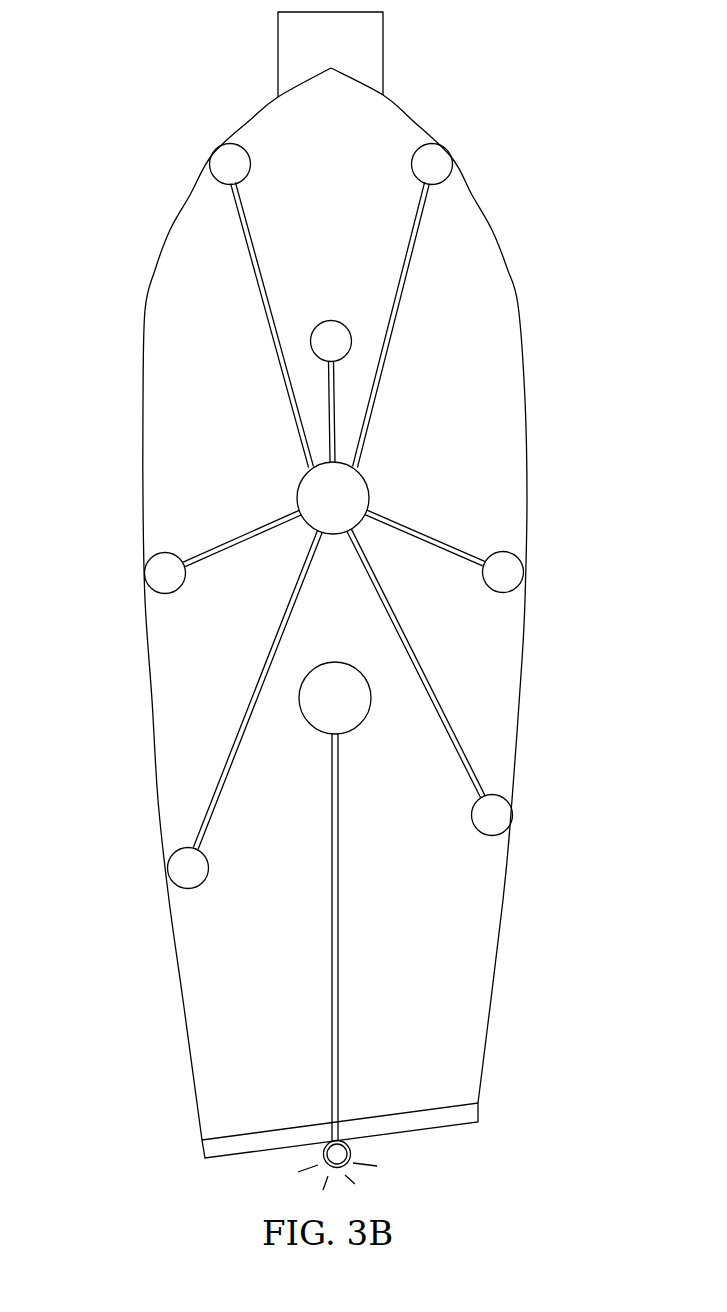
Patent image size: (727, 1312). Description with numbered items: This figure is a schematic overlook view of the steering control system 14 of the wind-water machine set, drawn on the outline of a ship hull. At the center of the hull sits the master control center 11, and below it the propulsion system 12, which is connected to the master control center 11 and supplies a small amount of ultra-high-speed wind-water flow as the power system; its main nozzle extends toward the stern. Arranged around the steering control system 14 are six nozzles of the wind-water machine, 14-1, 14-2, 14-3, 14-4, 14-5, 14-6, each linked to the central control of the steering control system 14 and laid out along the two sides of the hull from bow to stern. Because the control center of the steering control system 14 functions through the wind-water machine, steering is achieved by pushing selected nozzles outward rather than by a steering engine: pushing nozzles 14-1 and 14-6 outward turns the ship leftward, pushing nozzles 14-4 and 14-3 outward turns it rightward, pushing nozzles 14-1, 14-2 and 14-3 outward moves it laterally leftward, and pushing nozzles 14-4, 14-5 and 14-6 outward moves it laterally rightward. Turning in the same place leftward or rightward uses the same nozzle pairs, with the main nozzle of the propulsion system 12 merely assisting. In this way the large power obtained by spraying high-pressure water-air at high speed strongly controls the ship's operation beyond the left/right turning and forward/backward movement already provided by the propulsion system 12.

The steering control system 14 is at (369, 493).
The nozzle of the steering control system 14-1 is at (446, 150).
The nozzle of the steering control system 14-2 is at (517, 557).
The nozzle of the steering control system 14-3 is at (507, 800).
The nozzle of the steering control system 14-4 is at (216, 152).
The nozzle of the steering control system 14-5 is at (152, 557).
The nozzle of the steering control system 14-6 is at (173, 853).
The master control center 11 is at (347, 327).
The propulsion system 12 is at (371, 698).